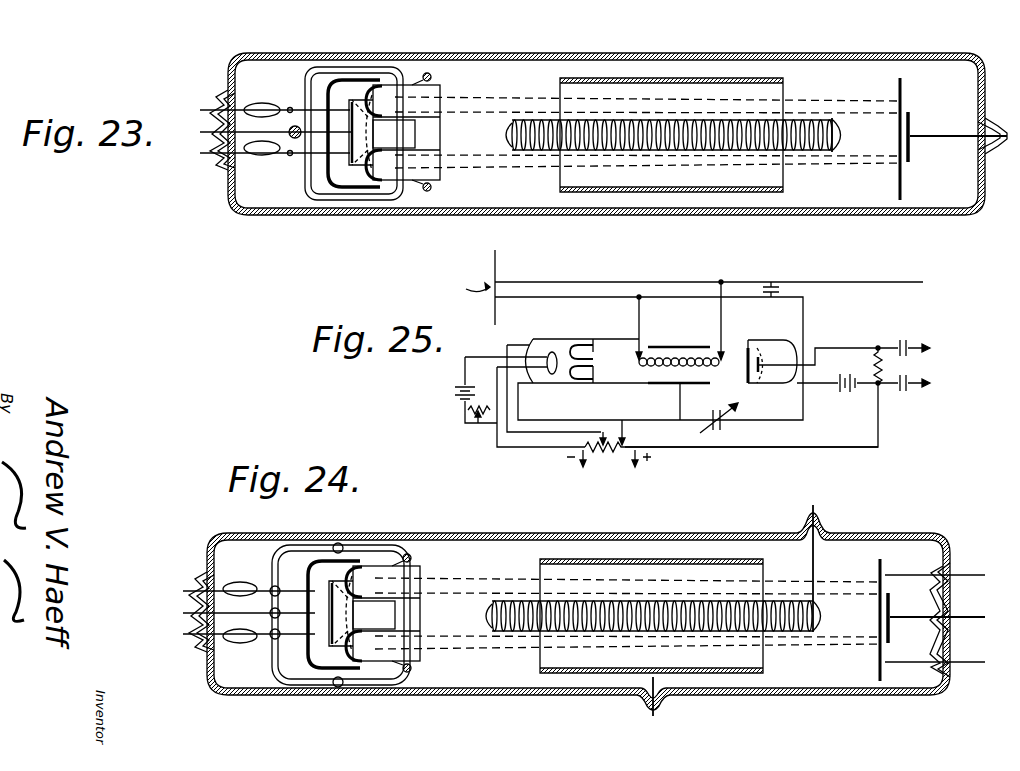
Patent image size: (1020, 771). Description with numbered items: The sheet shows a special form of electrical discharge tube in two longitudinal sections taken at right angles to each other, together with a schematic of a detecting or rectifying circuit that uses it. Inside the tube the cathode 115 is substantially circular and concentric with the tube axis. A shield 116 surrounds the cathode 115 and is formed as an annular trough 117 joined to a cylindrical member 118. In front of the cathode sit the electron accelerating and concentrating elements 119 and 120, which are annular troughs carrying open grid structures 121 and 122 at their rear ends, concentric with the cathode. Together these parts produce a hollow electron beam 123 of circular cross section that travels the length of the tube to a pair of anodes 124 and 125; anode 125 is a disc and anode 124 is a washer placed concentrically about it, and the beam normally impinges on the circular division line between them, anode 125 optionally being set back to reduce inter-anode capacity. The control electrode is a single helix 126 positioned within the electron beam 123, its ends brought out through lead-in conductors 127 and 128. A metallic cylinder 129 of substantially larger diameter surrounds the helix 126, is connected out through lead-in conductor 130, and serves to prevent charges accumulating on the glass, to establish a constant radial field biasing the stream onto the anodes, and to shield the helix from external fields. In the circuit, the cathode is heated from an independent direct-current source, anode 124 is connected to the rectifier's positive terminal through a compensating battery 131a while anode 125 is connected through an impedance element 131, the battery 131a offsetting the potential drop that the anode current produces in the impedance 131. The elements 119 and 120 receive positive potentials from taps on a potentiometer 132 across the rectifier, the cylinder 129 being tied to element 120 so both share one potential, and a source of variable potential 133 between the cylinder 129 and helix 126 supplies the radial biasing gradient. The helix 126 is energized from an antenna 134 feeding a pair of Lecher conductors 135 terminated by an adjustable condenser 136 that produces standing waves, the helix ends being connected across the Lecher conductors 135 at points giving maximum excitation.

In FIG. 23, the cathode 115 is at (350, 152).
In FIG. 25, the cathode 115 is at (554, 352).
In FIG. 24, the cathode 115 is at (330, 633).
In FIG. 23, the shield 116 is at (332, 180).
In FIG. 24, the shield 116 is at (311, 665).
In FIG. 23, the annular trough 117 is at (336, 82).
In FIG. 24, the annular trough 117 is at (316, 562).
In FIG. 23, the cylindrical member 118 is at (360, 187).
In FIG. 24, the cylindrical member 118 is at (353, 670).
In FIG. 23, the electron accelerating and concentrating element 119 is at (380, 87).
In FIG. 25, the electron accelerating and concentrating element 119 is at (582, 346).
In FIG. 24, the electron accelerating and concentrating element 119 is at (362, 568).
In FIG. 23, the electron accelerating and concentrating element 120 is at (440, 85).
In FIG. 25, the electron accelerating and concentrating element 120 is at (594, 342).
In FIG. 24, the electron accelerating and concentrating element 120 is at (418, 567).
In FIG. 23, the open grid structure 121 is at (370, 88).
In FIG. 24, the open grid structure 121 is at (345, 570).
In FIG. 23, the open grid structure 122 is at (395, 167).
In FIG. 24, the open grid structure 122 is at (378, 660).
In FIG. 23, the hollow electron beam 123 is at (487, 100).
In FIG. 24, the hollow electron beam 123 is at (452, 586).
In FIG. 23, the anode 124 is at (904, 86).
In FIG. 25, the anode 124 is at (749, 351).
In FIG. 24, the anode 124 is at (882, 575).
In FIG. 23, the anode 125 is at (912, 120).
In FIG. 25, the anode 125 is at (760, 370).
In FIG. 24, the anode 125 is at (892, 614).
In FIG. 23, the helix 126 is at (657, 122).
In FIG. 25, the helix 126 is at (640, 370).
In FIG. 24, the helix 126 is at (587, 603).
In FIG. 23, the lead-in conductor 127 is at (832, 142).
In FIG. 24, the lead-in conductor 127 is at (817, 513).
In FIG. 23, the lead-in conductor 128 is at (513, 133).
In FIG. 24, the lead-in conductor 128 is at (497, 600).
In FIG. 23, the metallic cylinder 129 is at (597, 78).
In FIG. 25, the metallic cylinder 129 is at (679, 367).
In FIG. 24, the metallic cylinder 129 is at (681, 558).
In FIG. 24, the lead-in conductor 130 is at (656, 711).
In FIG. 25, the impedance element 131 is at (877, 355).
In FIG. 25, the compensating battery 131a is at (848, 398).
In FIG. 25, the potentiometer 132 is at (610, 452).
In FIG. 25, the source of variable potential 133 is at (722, 425).
In FIG. 25, the antenna 134 is at (469, 279).
In FIG. 25, the Lecher conductors 135 is at (572, 297).
In FIG. 25, the condenser 136 is at (779, 289).